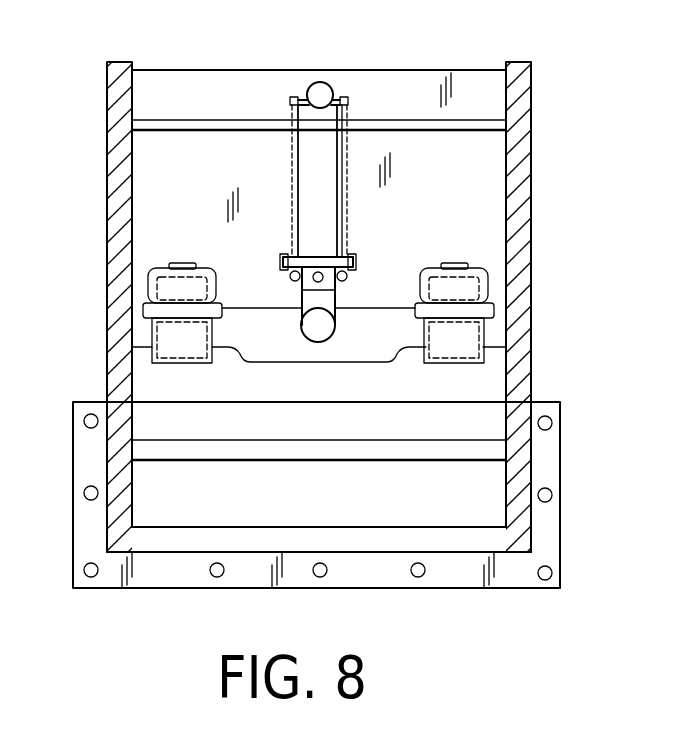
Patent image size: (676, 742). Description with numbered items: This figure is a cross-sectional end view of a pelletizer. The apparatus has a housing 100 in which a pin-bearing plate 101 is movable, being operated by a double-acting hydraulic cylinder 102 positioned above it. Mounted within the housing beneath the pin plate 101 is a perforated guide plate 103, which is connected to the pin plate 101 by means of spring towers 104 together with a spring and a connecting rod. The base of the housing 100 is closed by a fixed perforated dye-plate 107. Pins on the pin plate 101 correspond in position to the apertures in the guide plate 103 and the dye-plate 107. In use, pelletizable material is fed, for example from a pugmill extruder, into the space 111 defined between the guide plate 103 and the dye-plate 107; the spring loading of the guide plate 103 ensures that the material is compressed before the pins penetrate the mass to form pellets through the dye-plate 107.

The housing 100 is at (525, 173).
The pin-bearing plate 101 is at (490, 377).
The double-acting hydraulic cylinder 102 is at (290, 133).
The perforated guide plate 103 is at (487, 452).
The spring towers 104 is at (490, 273).
The fixed perforated dye-plate 107 is at (438, 537).
The space 111 is at (152, 510).